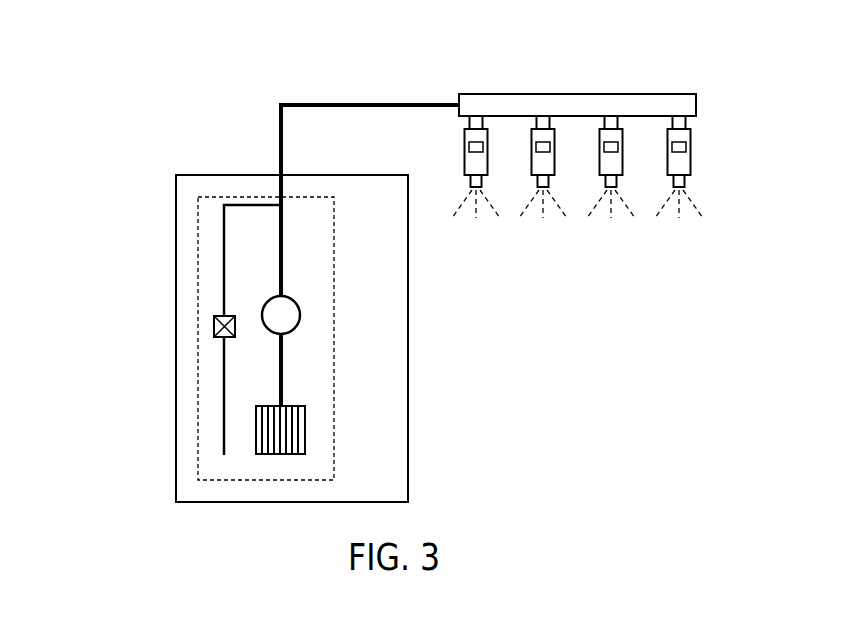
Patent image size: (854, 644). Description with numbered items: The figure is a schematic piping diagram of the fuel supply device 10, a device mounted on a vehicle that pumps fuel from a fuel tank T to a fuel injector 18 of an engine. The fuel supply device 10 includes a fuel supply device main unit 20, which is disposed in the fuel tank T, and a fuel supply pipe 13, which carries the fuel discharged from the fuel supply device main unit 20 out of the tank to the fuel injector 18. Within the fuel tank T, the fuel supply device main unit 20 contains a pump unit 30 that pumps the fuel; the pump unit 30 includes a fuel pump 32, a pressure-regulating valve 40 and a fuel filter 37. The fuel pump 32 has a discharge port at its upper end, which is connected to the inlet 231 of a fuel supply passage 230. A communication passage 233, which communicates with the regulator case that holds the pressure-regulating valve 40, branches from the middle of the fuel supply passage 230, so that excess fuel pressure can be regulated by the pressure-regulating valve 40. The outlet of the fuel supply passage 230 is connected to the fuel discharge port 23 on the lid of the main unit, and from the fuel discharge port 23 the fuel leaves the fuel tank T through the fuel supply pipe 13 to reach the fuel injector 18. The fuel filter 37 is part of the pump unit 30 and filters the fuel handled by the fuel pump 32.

The fuel supply device 10 is at (240, 107).
The fuel supply pipe 13 is at (338, 103).
The fuel injector 18 is at (650, 83).
The fuel tank T is at (408, 368).
The fuel supply device main unit 20 is at (198, 397).
The pump unit 30 is at (266, 338).
The fuel discharge port 23 is at (281, 173).
The fuel supply passage 230 is at (281, 187).
The inlet 231 is at (281, 258).
The communication passage 233 is at (224, 259).
The pressure-regulating valve 40 is at (214, 327).
The fuel pump 32 is at (300, 315).
The fuel filter 37 is at (305, 430).